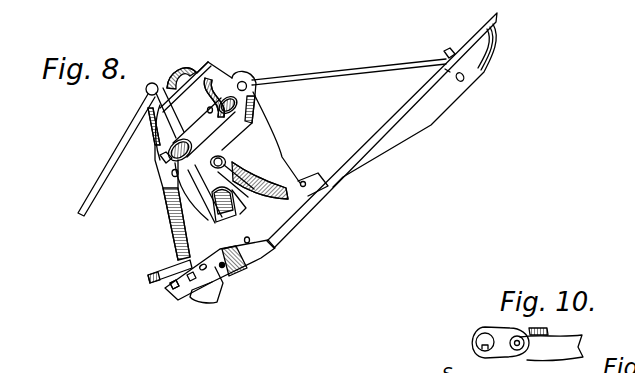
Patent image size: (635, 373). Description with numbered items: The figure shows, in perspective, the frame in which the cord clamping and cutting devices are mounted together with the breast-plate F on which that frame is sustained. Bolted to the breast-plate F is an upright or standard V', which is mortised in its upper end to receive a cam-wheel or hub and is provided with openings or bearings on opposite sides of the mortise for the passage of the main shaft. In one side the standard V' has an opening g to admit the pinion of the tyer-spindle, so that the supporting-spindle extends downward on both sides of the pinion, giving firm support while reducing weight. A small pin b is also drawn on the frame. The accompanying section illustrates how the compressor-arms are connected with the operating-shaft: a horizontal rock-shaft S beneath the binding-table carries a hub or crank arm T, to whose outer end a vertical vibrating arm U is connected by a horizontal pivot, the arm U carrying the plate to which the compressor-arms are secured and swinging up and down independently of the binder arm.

In FIG. 8, the breast-plate F is at (382, 130).
In FIG. 8, the standard V' is at (224, 161).
In FIG. 8, the opening g is at (218, 215).
In FIG. 8, the rock-shaft S is at (220, 270).
In FIG. 8, the pin b is at (177, 288).
In FIG. 10, the crank arm T is at (492, 335).
In FIG. 10, the vibrating arm U is at (551, 344).